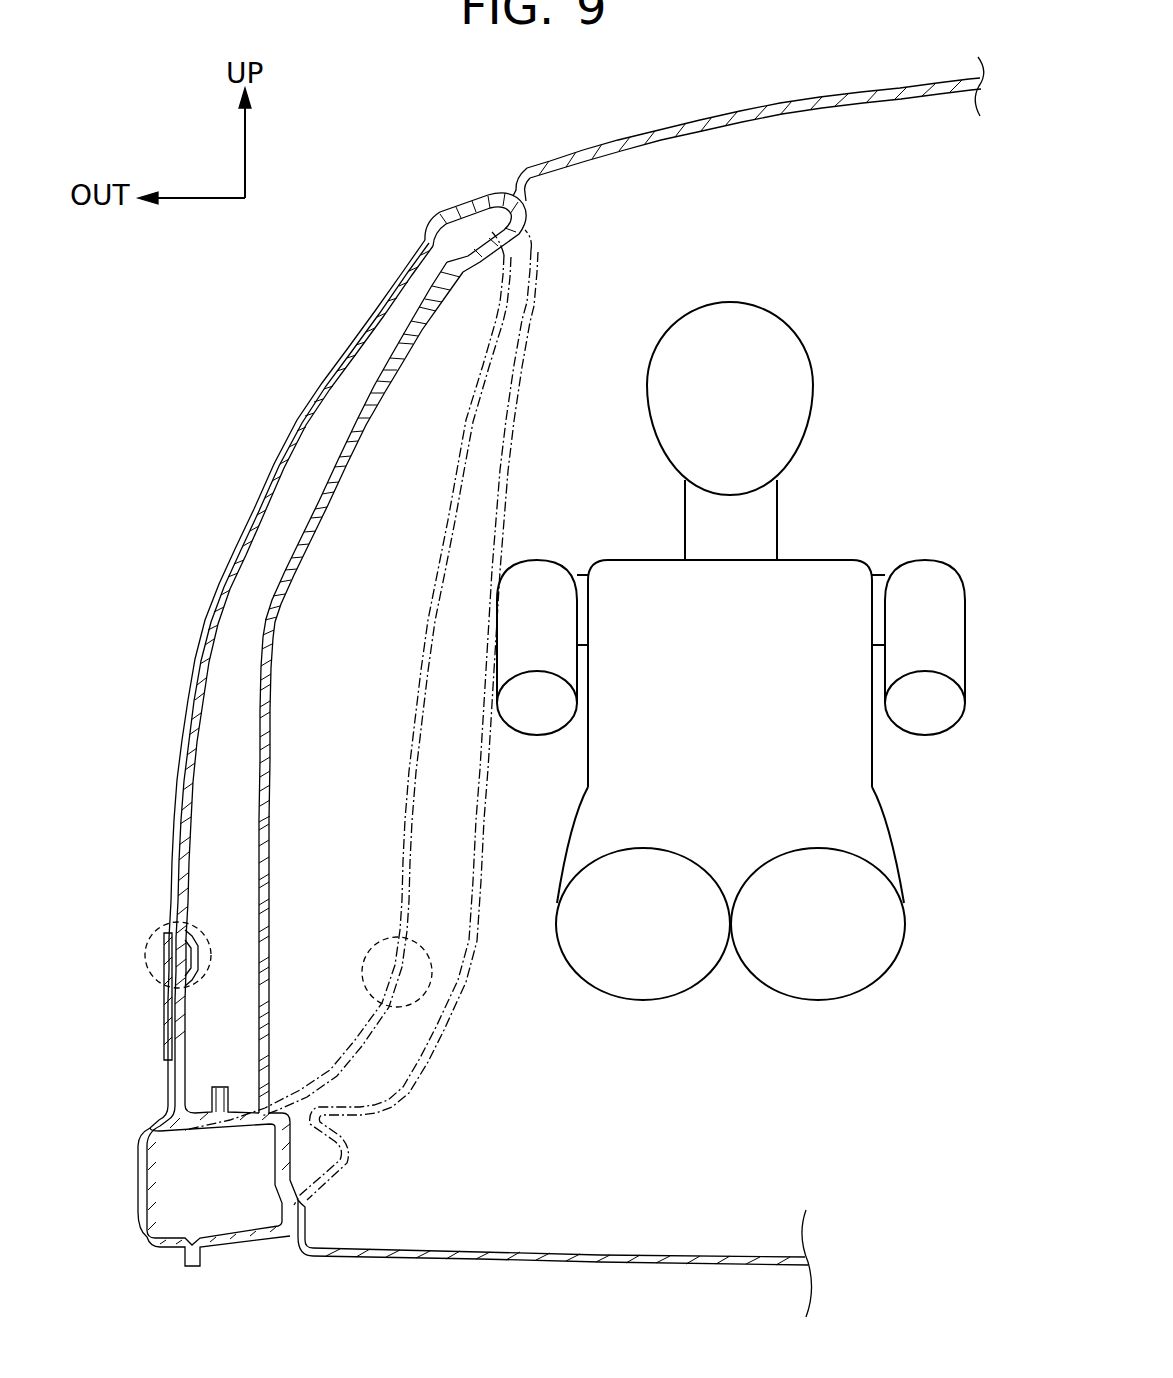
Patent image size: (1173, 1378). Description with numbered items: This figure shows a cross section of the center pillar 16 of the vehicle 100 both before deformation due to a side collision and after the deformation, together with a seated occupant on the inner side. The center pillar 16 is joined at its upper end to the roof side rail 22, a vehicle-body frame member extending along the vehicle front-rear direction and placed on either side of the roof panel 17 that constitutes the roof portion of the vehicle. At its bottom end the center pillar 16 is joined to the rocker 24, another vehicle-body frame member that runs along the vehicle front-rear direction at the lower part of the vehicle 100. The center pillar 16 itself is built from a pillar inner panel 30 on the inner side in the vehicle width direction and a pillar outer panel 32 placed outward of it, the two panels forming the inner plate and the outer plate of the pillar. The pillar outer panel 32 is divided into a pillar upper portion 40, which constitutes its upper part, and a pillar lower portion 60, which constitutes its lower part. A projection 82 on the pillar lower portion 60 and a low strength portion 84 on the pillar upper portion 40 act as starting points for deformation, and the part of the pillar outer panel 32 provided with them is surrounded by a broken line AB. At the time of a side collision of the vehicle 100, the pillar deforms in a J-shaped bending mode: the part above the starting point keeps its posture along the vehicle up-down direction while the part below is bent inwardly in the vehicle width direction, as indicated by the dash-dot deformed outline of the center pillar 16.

The vehicle 100 is at (383, 139).
The roof panel 17 is at (745, 108).
The roof side rail 22 is at (600, 228).
The center pillar 16 is at (212, 347).
The pillar inner panel 30 is at (331, 427).
The pillar outer panel 32 is at (278, 440).
The pillar upper portion 40 is at (210, 602).
The pillar lower portion 60 is at (198, 720).
The broken line AB is at (155, 925).
The low strength portion 84 is at (147, 957).
The projection 82 is at (198, 954).
The rocker 24 is at (227, 1250).